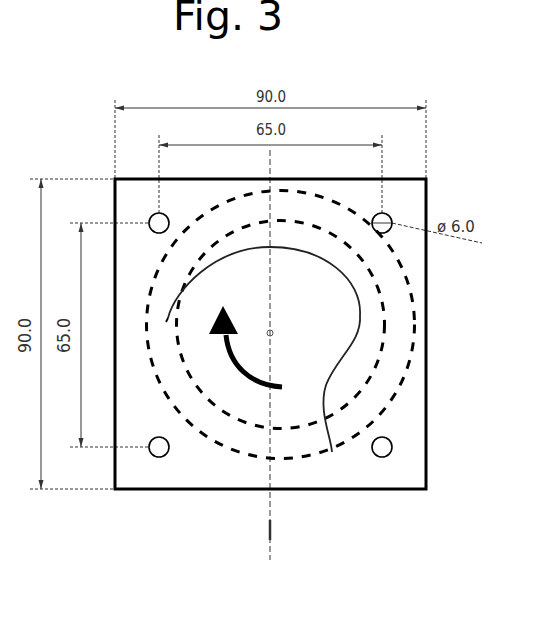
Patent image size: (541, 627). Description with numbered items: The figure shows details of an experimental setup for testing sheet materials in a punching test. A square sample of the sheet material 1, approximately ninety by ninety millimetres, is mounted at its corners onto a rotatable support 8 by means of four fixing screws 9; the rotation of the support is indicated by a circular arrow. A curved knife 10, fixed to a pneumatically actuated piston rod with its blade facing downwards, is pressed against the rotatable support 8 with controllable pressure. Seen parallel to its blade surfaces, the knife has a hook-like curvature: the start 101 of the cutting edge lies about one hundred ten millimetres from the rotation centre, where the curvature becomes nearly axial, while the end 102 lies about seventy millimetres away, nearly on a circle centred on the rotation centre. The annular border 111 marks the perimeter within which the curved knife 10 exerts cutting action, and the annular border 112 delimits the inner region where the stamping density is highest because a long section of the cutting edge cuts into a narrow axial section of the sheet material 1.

The sheet material 1 is at (137, 477).
The rotatable support 8 is at (237, 353).
The fixing screws 9 is at (151, 214).
The curved knife 10 is at (358, 297).
The start of the cutting edge 101 is at (325, 393).
The end of the cutting edge 102 is at (178, 297).
The annular border 111 is at (280, 466).
The annular border 112 is at (215, 407).